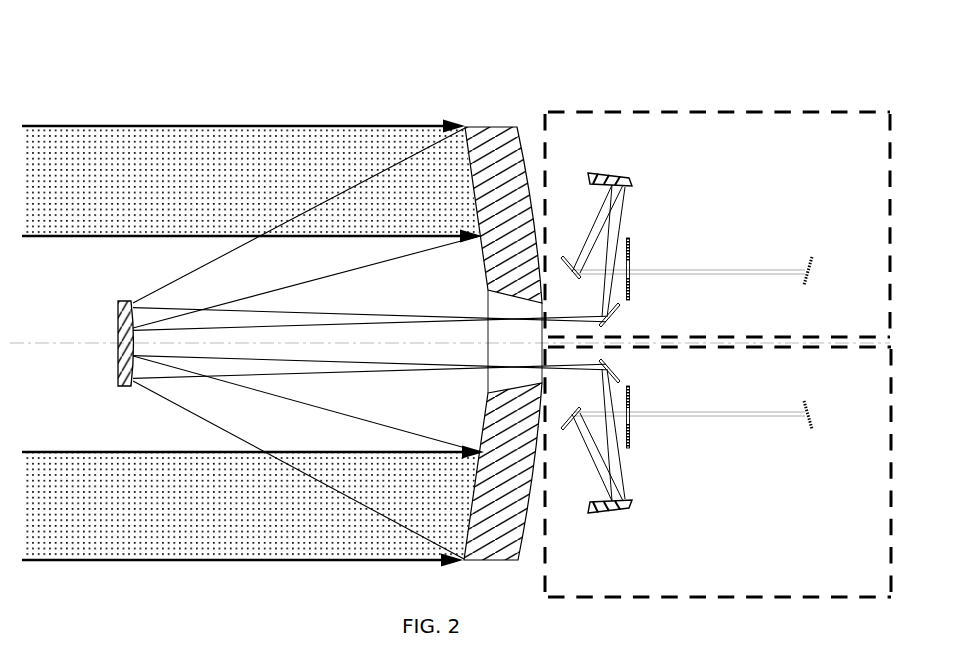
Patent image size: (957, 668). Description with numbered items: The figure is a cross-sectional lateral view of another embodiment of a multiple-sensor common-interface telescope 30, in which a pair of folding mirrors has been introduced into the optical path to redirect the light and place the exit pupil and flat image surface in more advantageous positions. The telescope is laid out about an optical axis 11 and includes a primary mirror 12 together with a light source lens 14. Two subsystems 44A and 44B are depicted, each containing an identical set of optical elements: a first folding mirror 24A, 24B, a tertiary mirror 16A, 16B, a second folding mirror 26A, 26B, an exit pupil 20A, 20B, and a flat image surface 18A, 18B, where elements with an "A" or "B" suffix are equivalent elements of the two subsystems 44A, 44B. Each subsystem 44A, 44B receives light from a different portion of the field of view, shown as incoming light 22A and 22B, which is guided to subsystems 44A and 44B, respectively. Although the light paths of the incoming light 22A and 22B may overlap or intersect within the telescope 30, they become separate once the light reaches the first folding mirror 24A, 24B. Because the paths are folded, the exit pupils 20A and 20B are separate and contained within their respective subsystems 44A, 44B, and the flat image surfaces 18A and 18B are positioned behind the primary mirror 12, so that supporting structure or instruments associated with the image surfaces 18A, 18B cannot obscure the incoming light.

The optical axis 11 is at (63, 343).
The primary mirror 12 is at (493, 133).
The light source lens 14 is at (126, 313).
The tertiary mirror 16A is at (614, 172).
The tertiary mirror 16B is at (614, 514).
The flat image surface 18A is at (814, 272).
The flat image surface 18B is at (814, 414).
The exit pupil 20A is at (631, 251).
The exit pupil 20B is at (631, 440).
The incoming light 22A is at (205, 155).
The incoming light 22B is at (205, 532).
The first folding mirror 24A is at (614, 319).
The first folding mirror 24B is at (614, 366).
The second folding mirror 26A is at (572, 274).
The second folding mirror 26B is at (572, 415).
The multiple-sensor common-interface telescope 30 is at (396, 68).
The subsystem 44A is at (717, 110).
The subsystem 44B is at (797, 598).